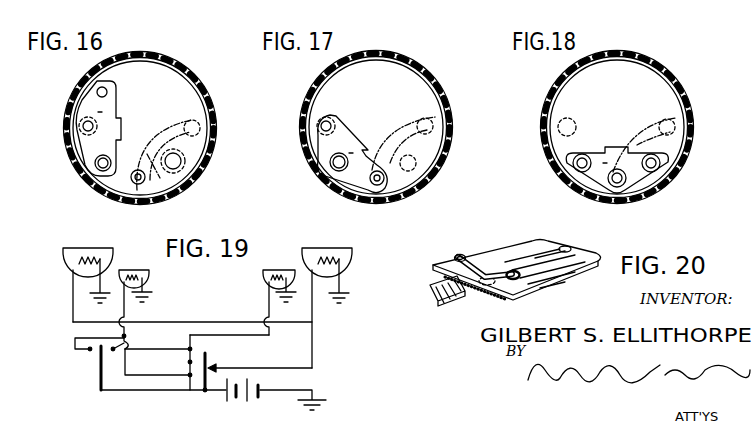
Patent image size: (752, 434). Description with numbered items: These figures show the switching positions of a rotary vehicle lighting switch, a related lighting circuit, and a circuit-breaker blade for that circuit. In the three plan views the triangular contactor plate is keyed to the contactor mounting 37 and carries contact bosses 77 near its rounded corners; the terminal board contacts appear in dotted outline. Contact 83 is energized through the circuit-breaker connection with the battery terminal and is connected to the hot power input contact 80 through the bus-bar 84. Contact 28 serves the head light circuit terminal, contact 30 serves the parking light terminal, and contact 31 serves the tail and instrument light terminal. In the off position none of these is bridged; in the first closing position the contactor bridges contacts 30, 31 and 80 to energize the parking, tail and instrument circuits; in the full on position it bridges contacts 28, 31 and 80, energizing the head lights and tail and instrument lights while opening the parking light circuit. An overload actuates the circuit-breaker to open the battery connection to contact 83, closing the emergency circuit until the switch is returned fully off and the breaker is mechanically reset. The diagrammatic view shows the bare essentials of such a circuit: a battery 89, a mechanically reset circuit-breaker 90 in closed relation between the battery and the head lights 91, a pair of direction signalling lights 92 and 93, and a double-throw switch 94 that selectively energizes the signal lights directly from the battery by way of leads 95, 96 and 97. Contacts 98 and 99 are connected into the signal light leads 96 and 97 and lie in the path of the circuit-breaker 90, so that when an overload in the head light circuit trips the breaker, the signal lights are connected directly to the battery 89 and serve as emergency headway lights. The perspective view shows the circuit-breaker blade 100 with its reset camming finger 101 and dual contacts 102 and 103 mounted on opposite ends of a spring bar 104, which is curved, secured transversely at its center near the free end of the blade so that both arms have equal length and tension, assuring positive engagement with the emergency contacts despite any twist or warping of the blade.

In FIG. 16, the contactor mounting 37 is at (178, 68).
In FIG. 17, the contactor mounting 37 is at (312, 82).
In FIG. 18, the contactor mounting 37 is at (557, 80).
In FIG. 16, the contact bosses 77 is at (97, 90).
In FIG. 17, the contact bosses 77 is at (352, 154).
In FIG. 18, the contact bosses 77 is at (617, 170).
In FIG. 16, the contact 30 is at (80, 132).
In FIG. 17, the contact 30 is at (300, 132).
In FIG. 18, the contact 30 is at (557, 128).
In FIG. 16, the contact 31 is at (78, 168).
In FIG. 17, the contact 31 is at (315, 180).
In FIG. 18, the contact 31 is at (570, 185).
In FIG. 16, the contact 83 is at (198, 118).
In FIG. 17, the contact 83 is at (443, 110).
In FIG. 18, the contact 83 is at (675, 118).
In FIG. 16, the contact 28 is at (187, 163).
In FIG. 17, the contact 28 is at (445, 165).
In FIG. 18, the contact 28 is at (665, 162).
In FIG. 16, the bus-bar 84 is at (153, 165).
In FIG. 17, the bus-bar 84 is at (393, 128).
In FIG. 18, the bus-bar 84 is at (643, 127).
In FIG. 16, the power input contact 80 is at (136, 207).
In FIG. 17, the power input contact 80 is at (373, 188).
In FIG. 18, the power input contact 80 is at (623, 180).
In FIG. 19, the head lights 91 is at (64, 256).
In FIG. 19, the direction signalling light 92 is at (148, 278).
In FIG. 19, the direction signalling light 93 is at (261, 275).
In FIG. 19, the double-throw switch 94 is at (97, 363).
In FIG. 19, the lead 96 is at (75, 338).
In FIG. 19, the lead 97 is at (152, 355).
In FIG. 19, the contact 99 is at (194, 330).
In FIG. 19, the circuit-breaker 90 is at (208, 355).
In FIG. 19, the lead 95 is at (142, 390).
In FIG. 19, the contact 98 is at (190, 392).
In FIG. 19, the battery 89 is at (252, 401).
In FIG. 20, the circuit-breaker blade 100 is at (548, 278).
In FIG. 20, the reset camming finger 101 is at (452, 303).
In FIG. 20, the contact 102 is at (463, 254).
In FIG. 20, the contact 103 is at (515, 282).
In FIG. 20, the spring bar 104 is at (483, 262).